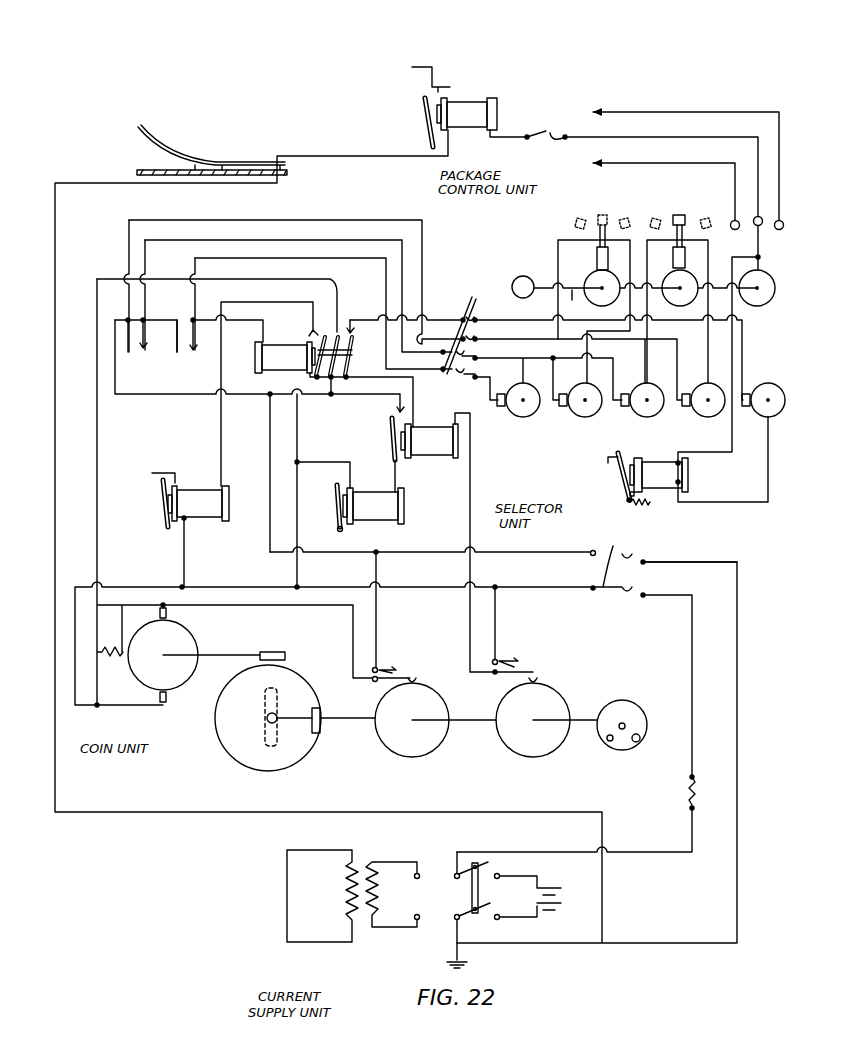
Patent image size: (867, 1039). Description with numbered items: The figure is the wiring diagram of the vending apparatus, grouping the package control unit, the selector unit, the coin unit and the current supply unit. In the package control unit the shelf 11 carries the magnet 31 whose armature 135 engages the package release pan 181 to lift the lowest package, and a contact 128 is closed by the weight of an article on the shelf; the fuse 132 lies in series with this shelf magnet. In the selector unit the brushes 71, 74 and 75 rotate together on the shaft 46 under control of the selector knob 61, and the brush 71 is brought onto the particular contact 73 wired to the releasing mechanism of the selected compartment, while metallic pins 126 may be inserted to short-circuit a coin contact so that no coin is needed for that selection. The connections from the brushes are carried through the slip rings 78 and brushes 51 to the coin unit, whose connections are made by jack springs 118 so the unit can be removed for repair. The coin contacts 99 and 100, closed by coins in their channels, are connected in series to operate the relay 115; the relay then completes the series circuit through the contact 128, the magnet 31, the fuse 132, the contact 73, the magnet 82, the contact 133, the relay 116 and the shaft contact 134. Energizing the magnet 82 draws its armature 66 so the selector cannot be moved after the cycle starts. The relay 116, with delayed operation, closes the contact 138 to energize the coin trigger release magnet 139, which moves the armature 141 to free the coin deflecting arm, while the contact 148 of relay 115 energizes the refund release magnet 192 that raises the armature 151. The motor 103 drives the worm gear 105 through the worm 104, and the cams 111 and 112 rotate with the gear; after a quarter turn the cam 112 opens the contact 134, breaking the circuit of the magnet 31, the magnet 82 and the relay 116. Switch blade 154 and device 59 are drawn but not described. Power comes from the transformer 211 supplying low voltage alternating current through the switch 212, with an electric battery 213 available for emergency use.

The shelf 11 is at (177, 174).
The contact 128 is at (197, 166).
The package release pan 181 is at (440, 75).
The magnet 31 is at (466, 103).
The armature 135 is at (423, 124).
The fuse 132 is at (548, 134).
The metallic pin 126 is at (680, 214).
The brush 71 is at (740, 232).
The contact 73 is at (762, 230).
The selector knob 61 is at (534, 270).
The brush 74 is at (597, 264).
The brush 75 is at (673, 266).
The shaft 46 is at (577, 305).
The jack spring 118 is at (587, 533).
The contact 148 is at (318, 318).
The switch blade 154 is at (339, 325).
The contact 133 is at (348, 350).
The relay 115 is at (280, 350).
The contact 99 is at (146, 347).
The contact 100 is at (220, 346).
The contact 138 is at (390, 417).
The relay 116 is at (431, 457).
The brush 51 is at (690, 382).
The slip ring 78 is at (735, 416).
The contactor release magnet 82 is at (657, 461).
The armature 66 is at (616, 478).
The armature 151 is at (158, 504).
The refund release magnet 192 is at (207, 522).
The armature 141 is at (335, 505).
The coin trigger release magnet 139 is at (373, 523).
The motor 103 is at (199, 646).
The worm 104 is at (278, 652).
The worm gear 105 is at (308, 761).
The cam 111 is at (408, 757).
The cam 112 is at (541, 757).
The contact 134 is at (557, 660).
The coin return device 59 is at (608, 745).
The transformer 211 is at (359, 862).
The switch 212 is at (455, 922).
The electric battery 213 is at (565, 884).